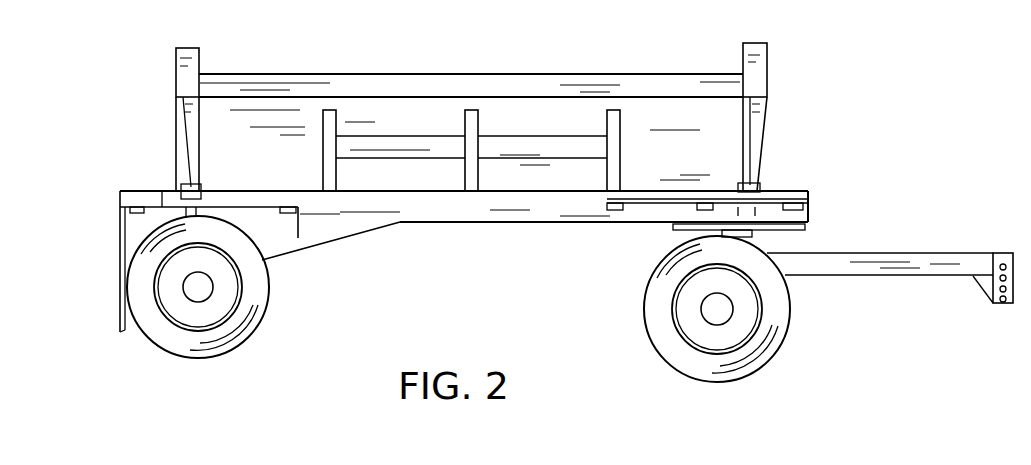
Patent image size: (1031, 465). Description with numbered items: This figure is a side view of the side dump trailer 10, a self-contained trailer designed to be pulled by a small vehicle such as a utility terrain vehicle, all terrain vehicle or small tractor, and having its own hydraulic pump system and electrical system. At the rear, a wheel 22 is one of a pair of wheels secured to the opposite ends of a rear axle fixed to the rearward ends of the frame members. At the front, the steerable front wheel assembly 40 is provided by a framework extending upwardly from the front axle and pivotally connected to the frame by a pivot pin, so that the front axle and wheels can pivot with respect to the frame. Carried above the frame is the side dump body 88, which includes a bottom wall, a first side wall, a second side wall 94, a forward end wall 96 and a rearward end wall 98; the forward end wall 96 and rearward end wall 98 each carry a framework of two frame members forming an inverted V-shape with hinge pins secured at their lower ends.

The side dump trailer 10 is at (468, 227).
The wheel 22 is at (257, 303).
The steerable front wheel assembly 40 is at (862, 240).
The side dump body 88 is at (602, 70).
The second side wall 94 is at (250, 166).
The forward end wall 96 is at (760, 143).
The rearward end wall 98 is at (177, 140).